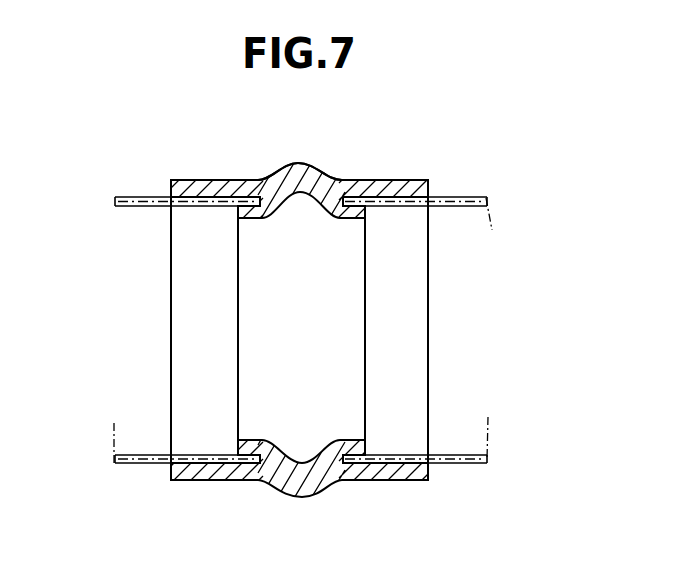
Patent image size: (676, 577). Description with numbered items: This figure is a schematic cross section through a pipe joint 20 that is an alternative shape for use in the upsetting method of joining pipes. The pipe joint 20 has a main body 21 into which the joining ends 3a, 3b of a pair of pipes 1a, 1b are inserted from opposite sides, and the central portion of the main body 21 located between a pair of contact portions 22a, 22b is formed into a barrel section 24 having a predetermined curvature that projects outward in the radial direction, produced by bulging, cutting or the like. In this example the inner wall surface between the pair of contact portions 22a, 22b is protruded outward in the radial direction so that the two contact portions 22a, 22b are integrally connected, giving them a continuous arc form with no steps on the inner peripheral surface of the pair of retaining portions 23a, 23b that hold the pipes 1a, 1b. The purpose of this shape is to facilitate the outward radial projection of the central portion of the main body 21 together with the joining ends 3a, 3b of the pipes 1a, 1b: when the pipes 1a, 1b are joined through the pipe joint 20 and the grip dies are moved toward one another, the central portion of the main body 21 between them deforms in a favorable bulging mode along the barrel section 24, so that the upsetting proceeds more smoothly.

The pipe 1a is at (469, 458).
The pipe 1b is at (113, 218).
The joining end 3a is at (343, 452).
The joining end 3b is at (241, 452).
The pipe joint 20 is at (296, 304).
The main body 21 is at (379, 180).
The contact portion 22a is at (326, 200).
The contact portion 22b is at (263, 184).
The retaining portion 23a is at (365, 210).
The retaining portion 23b is at (238, 214).
The barrel section 24 is at (300, 163).